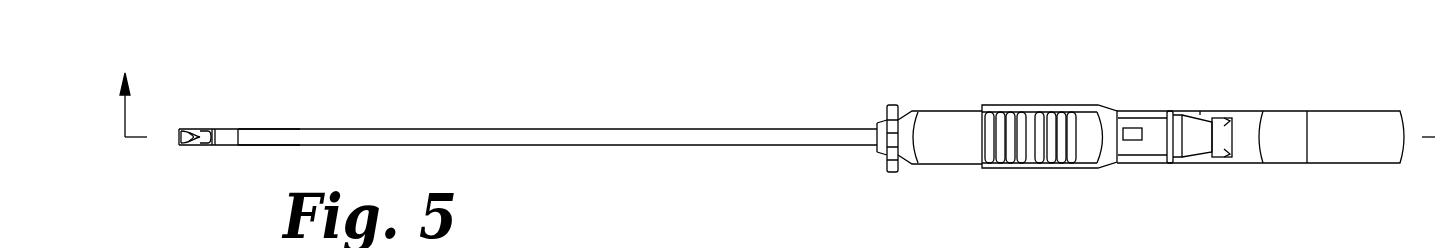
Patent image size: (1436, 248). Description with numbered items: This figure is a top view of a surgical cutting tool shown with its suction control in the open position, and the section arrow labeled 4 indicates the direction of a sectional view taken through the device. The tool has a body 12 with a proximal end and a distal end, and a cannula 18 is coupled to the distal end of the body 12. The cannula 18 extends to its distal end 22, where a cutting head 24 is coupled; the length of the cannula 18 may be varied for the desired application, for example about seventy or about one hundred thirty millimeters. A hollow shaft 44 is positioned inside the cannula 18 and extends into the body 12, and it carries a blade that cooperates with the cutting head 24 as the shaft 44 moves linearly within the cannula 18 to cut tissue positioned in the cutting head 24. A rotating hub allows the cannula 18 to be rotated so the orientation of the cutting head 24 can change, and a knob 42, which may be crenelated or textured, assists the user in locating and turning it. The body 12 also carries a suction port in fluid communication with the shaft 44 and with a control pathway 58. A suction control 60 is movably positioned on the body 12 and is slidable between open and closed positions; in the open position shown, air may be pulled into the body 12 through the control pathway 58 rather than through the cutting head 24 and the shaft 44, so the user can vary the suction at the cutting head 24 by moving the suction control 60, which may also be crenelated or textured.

The section view indicator 4 is at (132, 89).
The body 12 is at (948, 110).
The cannula 18 is at (530, 137).
The distal end of the cannula 22 is at (253, 138).
The cutting head 24 is at (188, 128).
The knob 42 is at (893, 103).
The hollow shaft 44 is at (210, 130).
The control pathway 58 is at (1125, 137).
The suction control 60 is at (1032, 112).